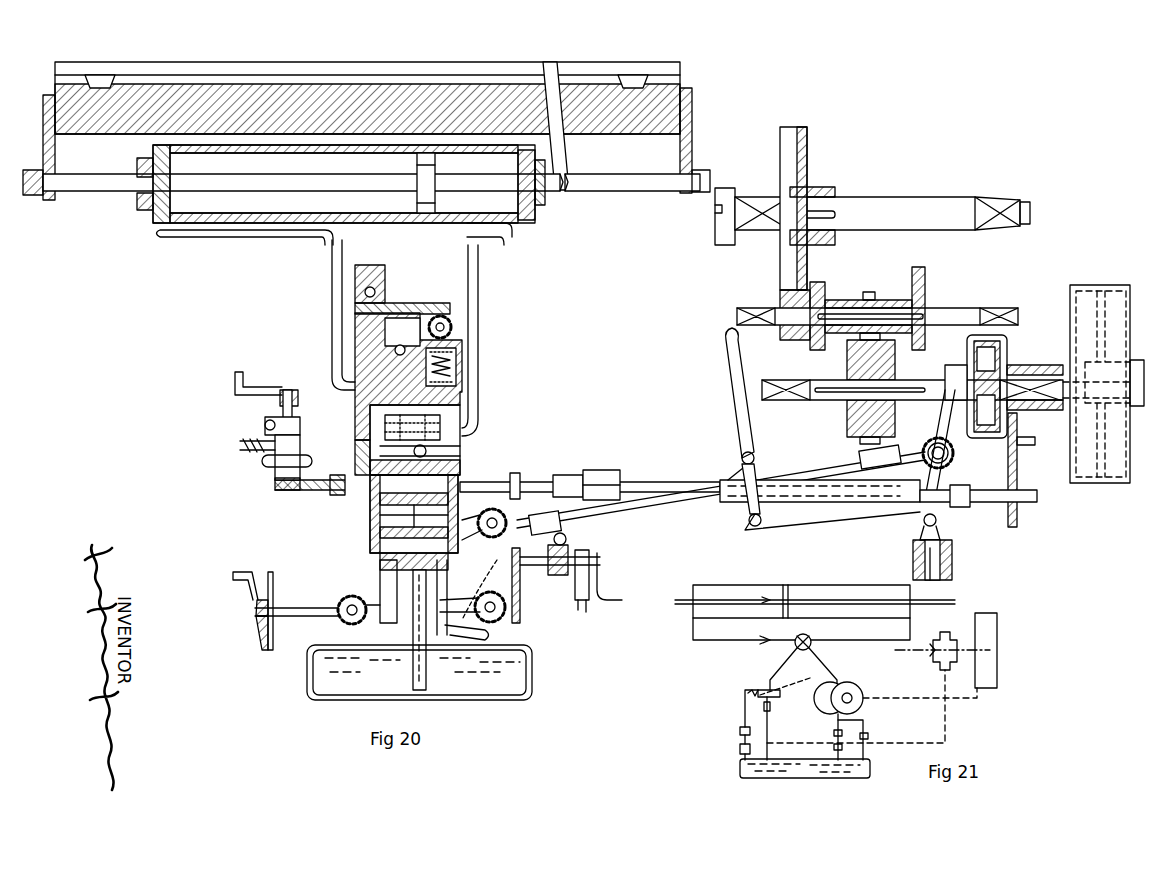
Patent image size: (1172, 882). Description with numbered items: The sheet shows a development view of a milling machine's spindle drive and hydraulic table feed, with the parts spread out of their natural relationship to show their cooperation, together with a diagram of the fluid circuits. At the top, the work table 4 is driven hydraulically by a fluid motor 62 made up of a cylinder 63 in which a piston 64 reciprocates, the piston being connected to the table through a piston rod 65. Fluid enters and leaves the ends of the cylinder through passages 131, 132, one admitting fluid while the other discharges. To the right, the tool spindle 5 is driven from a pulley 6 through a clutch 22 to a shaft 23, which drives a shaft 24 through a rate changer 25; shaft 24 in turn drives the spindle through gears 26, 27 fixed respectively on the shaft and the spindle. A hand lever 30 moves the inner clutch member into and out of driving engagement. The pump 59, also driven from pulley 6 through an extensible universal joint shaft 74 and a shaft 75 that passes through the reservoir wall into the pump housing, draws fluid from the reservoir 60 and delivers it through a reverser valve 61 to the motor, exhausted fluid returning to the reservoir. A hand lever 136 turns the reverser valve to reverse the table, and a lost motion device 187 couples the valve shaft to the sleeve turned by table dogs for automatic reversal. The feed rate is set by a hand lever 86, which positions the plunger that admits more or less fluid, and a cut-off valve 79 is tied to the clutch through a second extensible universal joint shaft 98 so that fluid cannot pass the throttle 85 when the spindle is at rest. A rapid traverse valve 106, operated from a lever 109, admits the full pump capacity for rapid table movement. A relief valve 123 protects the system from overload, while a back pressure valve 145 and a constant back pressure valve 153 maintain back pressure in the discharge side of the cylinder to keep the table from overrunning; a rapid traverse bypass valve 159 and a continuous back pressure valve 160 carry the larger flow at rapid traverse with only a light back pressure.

In FIG. 20, the table 4 is at (363, 63).
In FIG. 20, the tool spindle 5 is at (876, 198).
In FIG. 20, the pulley 6 is at (1115, 484).
In FIG. 21, the pulley 6 is at (988, 614).
In FIG. 20, the clutch 22 is at (994, 417).
In FIG. 21, the clutch 22 is at (936, 658).
In FIG. 20, the shaft 23 is at (928, 400).
In FIG. 20, the shaft 24 is at (938, 305).
In FIG. 20, the rate changer 25 is at (880, 336).
In FIG. 20, the gear 26 is at (795, 330).
In FIG. 20, the gear 27 is at (798, 127).
In FIG. 20, the hand lever 30 is at (733, 374).
In FIG. 20, the pump 59 is at (366, 512).
In FIG. 21, the pump 59 is at (862, 688).
In FIG. 20, the reservoir 60 is at (522, 668).
In FIG. 21, the reservoir 60 is at (872, 769).
In FIG. 20, the reverser valve 61 is at (445, 426).
In FIG. 21, the reverser valve 61 is at (815, 644).
In FIG. 20, the fluid motor 62 is at (386, 213).
In FIG. 21, the fluid motor 62 is at (852, 570).
In FIG. 20, the cylinder 63 is at (222, 205).
In FIG. 20, the piston 64 is at (425, 213).
In FIG. 20, the piston rod 65 is at (600, 186).
In FIG. 20, the extensible universal joint shaft 74 is at (738, 502).
In FIG. 21, the extensible universal joint shaft 74 is at (834, 747).
In FIG. 20, the shaft 75 is at (500, 480).
In FIG. 20, the cut-off valve 79 is at (412, 606).
In FIG. 20, the throttle 85 is at (378, 595).
In FIG. 21, the throttle 85 is at (834, 732).
In FIG. 20, the hand lever 86 is at (255, 570).
In FIG. 20, the extensible universal joint shaft 98 is at (655, 502).
In FIG. 20, the rapid traverse valve 106 is at (470, 576).
In FIG. 21, the rapid traverse valve 106 is at (868, 726).
In FIG. 20, the lever 109 is at (606, 586).
In FIG. 20, the relief valve 123 is at (462, 445).
In FIG. 20, the passage 131 is at (330, 255).
In FIG. 20, the passage 132 is at (480, 258).
In FIG. 20, the hand lever 136 is at (238, 378).
In FIG. 20, the back pressure valve 145 is at (462, 356).
In FIG. 21, the back pressure valve 145 is at (773, 690).
In FIG. 20, the back pressure valve 153 is at (442, 316).
In FIG. 21, the back pressure valve 153 is at (772, 706).
In FIG. 20, the rapid traverse bypass valve 159 is at (415, 303).
In FIG. 21, the rapid traverse bypass valve 159 is at (738, 731).
In FIG. 20, the continuous back pressure valve 160 is at (372, 265).
In FIG. 21, the continuous back pressure valve 160 is at (740, 748).
In FIG. 20, the lost motion device 187 is at (258, 428).